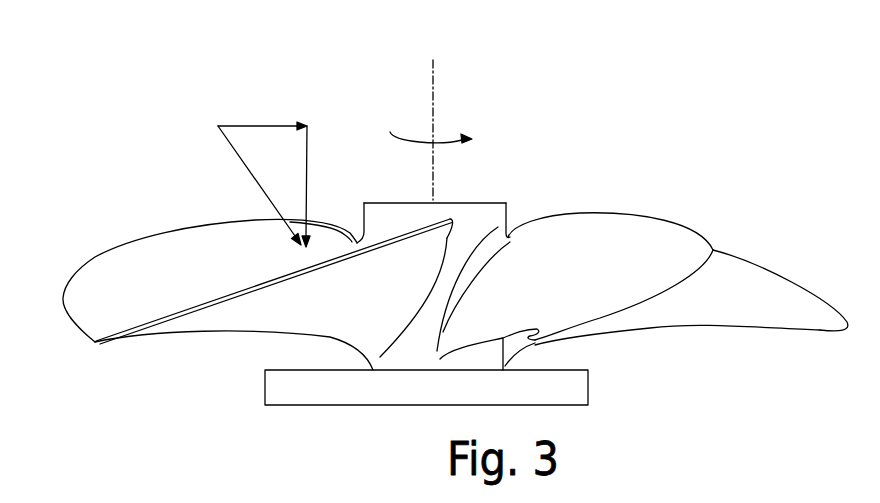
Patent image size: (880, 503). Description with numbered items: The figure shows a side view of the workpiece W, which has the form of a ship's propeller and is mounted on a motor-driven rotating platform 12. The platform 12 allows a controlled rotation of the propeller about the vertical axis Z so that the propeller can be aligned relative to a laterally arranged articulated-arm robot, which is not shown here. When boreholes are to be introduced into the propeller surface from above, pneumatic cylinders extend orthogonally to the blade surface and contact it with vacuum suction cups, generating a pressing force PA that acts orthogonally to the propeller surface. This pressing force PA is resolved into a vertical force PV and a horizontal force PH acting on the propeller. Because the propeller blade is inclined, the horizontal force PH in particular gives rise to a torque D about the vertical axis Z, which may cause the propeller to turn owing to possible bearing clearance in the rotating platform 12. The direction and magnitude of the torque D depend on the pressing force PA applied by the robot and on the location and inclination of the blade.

The rotating platform 12 is at (387, 390).
The workpiece W is at (140, 263).
The vertical axis Z is at (435, 113).
The torque D is at (443, 138).
The horizontal force PH is at (260, 126).
The vertical force PV is at (307, 173).
The pressing force PA is at (250, 169).